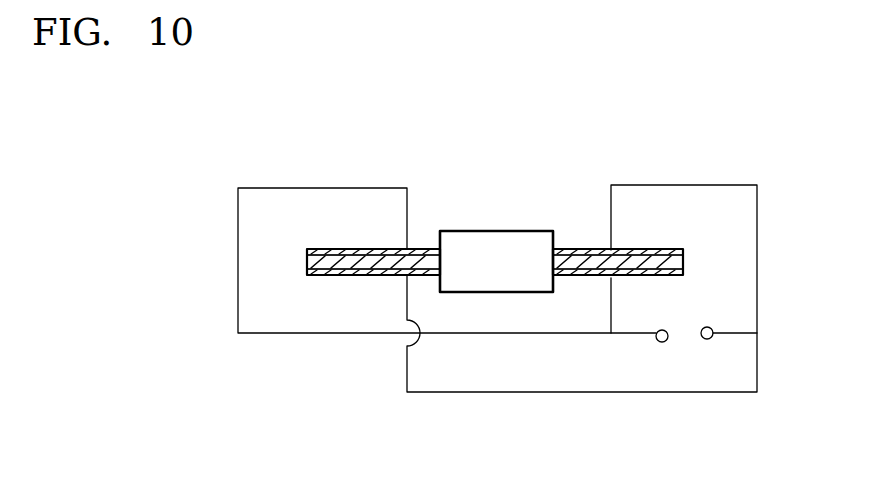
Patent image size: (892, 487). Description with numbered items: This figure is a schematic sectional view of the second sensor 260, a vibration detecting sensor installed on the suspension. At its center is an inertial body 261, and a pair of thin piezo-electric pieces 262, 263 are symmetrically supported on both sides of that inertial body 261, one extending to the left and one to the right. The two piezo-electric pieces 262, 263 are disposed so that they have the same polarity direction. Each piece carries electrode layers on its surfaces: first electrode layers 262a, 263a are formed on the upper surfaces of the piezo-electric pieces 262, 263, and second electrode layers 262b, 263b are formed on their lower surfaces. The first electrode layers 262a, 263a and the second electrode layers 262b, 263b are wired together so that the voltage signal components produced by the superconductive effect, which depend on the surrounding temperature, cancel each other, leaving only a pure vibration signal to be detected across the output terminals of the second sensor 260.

The second sensor 260 is at (520, 149).
The inertial body 261 is at (478, 242).
The piezo-electric piece 262 is at (362, 248).
The first electrode layer 262a is at (325, 249).
The second electrode layer 262b is at (322, 276).
The piezo-electric piece 263 is at (658, 250).
The first electrode layer 263a is at (585, 250).
The second electrode layer 263b is at (595, 278).